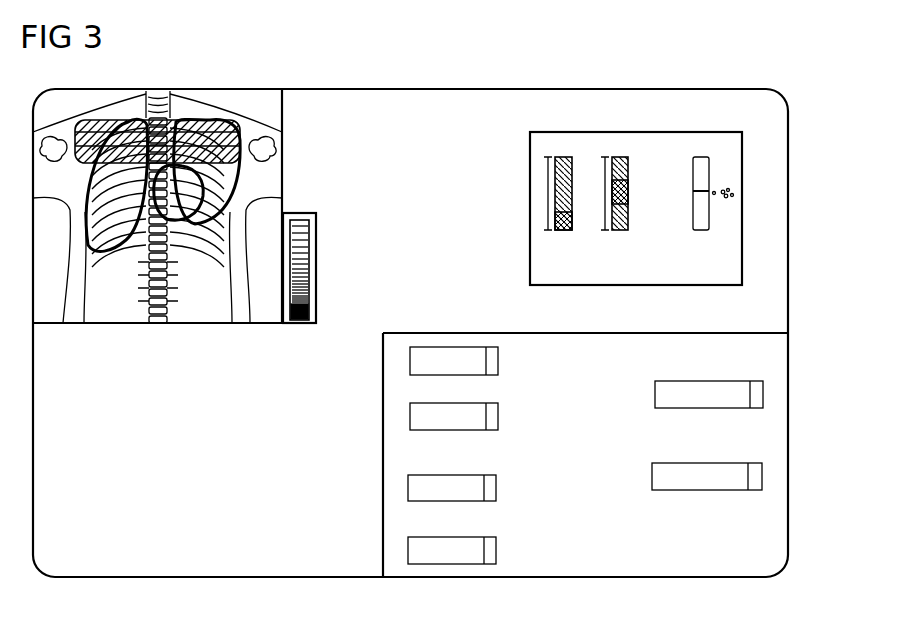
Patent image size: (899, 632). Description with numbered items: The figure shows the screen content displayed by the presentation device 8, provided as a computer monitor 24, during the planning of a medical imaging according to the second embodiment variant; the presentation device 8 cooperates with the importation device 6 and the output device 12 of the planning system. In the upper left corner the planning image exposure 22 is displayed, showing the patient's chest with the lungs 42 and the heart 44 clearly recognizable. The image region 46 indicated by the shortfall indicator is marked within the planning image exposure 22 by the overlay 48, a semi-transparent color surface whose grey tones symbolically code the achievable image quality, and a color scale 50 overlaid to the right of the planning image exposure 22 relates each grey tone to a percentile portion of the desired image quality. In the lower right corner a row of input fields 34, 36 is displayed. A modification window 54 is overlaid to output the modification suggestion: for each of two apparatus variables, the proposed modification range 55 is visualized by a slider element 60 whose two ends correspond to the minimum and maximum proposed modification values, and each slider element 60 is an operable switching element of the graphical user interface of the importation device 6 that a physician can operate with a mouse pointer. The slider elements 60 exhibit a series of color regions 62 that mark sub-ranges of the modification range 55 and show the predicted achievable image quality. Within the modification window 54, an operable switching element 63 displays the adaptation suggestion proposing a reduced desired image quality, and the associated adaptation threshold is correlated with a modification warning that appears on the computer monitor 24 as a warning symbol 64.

The importation device 6 is at (800, 250).
The presentation device 8 is at (478, 85).
The output device 12 is at (268, 82).
The planning image exposure 22 is at (267, 300).
The computer monitor 24 is at (745, 88).
The input field 34 is at (410, 422).
The input field 36 is at (473, 347).
The lungs 42 is at (117, 323).
The heart 44 is at (205, 323).
The image region 46 is at (205, 125).
The overlay 48 is at (74, 176).
The color scale 50 is at (318, 246).
The modification window 54 is at (742, 145).
The modification range 55 is at (548, 180).
The slider element 60 is at (560, 150).
The color regions 62 is at (560, 218).
The operable switching element 63 is at (700, 157).
The warning symbol 64 is at (733, 198).